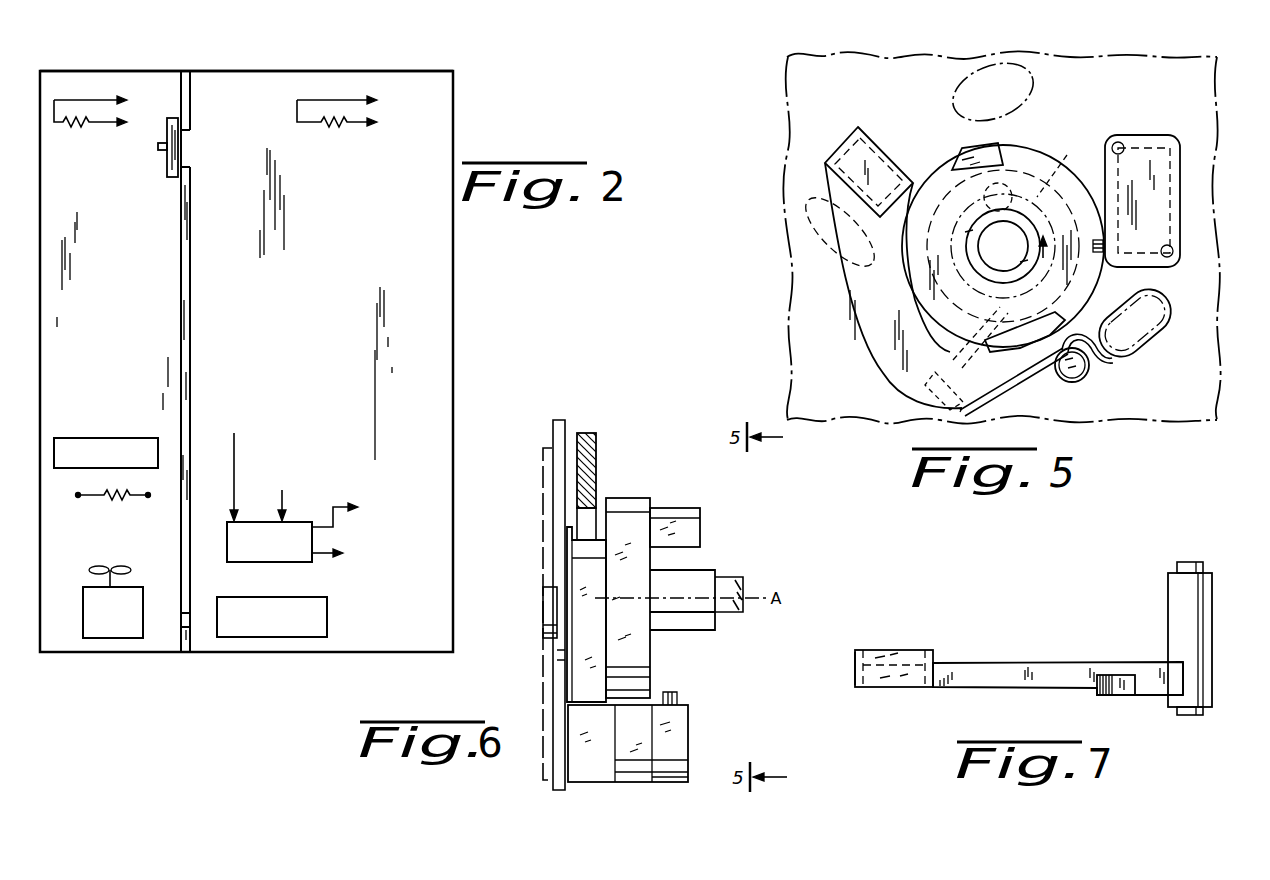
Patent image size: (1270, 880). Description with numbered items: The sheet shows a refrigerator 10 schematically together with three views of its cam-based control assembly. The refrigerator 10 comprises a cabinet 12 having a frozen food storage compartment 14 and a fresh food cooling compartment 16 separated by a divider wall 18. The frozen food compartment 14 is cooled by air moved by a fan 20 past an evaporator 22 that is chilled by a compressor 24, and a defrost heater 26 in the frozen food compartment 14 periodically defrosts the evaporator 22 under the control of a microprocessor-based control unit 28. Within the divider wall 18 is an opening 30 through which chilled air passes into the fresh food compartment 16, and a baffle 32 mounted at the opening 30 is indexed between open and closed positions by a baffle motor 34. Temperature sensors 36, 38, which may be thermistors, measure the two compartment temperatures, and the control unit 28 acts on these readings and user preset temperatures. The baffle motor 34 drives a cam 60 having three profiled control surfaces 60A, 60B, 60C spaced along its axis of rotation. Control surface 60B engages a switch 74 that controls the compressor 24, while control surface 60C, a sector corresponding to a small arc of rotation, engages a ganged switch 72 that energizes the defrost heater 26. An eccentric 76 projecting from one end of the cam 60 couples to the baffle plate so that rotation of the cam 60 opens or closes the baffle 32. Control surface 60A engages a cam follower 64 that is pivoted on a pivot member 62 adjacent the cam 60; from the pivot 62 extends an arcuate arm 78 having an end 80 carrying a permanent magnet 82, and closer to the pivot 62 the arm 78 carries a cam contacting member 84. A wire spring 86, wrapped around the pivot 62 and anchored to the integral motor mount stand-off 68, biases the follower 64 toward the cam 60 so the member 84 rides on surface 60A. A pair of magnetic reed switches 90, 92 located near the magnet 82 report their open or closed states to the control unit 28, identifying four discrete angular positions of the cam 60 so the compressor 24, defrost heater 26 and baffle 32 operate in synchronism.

In FIG. 2, the refrigerator 10 is at (372, 62).
In FIG. 2, the cabinet 12 is at (453, 341).
In FIG. 2, the frozen food storage compartment 14 is at (98, 264).
In FIG. 2, the fresh food cooling compartment 16 is at (310, 231).
In FIG. 2, the divider wall 18 is at (190, 288).
In FIG. 2, the fan 20 is at (136, 596).
In FIG. 2, the evaporator 22 is at (98, 440).
In FIG. 2, the compressor 24 is at (318, 607).
In FIG. 2, the defrost heater 26 is at (118, 494).
In FIG. 2, the control unit 28 is at (298, 525).
In FIG. 2, the opening 30 is at (190, 167).
In FIG. 2, the baffle 32 is at (167, 168).
In FIG. 2, the baffle motor 34 is at (163, 142).
In FIG. 2, the temperature sensor 36 is at (80, 112).
In FIG. 2, the temperature sensor 38 is at (330, 112).
In FIG. 6, the cam 60 is at (633, 474).
In FIG. 6, the control surface 60A is at (577, 570).
In FIG. 6, the control surface 60B is at (640, 666).
In FIG. 6, the control surface 60C is at (677, 512).
In FIG. 5, the control surface 60C is at (987, 150).
In FIG. 5, the pivot 62 is at (1076, 372).
In FIG. 7, the pivot 62 is at (1198, 603).
In FIG. 6, the cam follower 64 is at (587, 438).
In FIG. 5, the cam follower 64 is at (888, 408).
In FIG. 7, the cam follower 64 is at (1055, 634).
In FIG. 5, the stand-off 68 is at (1157, 303).
In FIG. 6, the switch 72 is at (683, 722).
In FIG. 6, the switch 74 is at (645, 760).
In FIG. 6, the eccentric 76 is at (545, 624).
In FIG. 5, the eccentric 76 is at (1060, 165).
In FIG. 5, the arcuate arm 78 is at (875, 327).
In FIG. 7, the arcuate arm 78 is at (973, 688).
In FIG. 5, the end 80 is at (870, 138).
In FIG. 7, the end 80 is at (855, 670).
In FIG. 5, the permanent magnet 82 is at (852, 155).
In FIG. 7, the permanent magnet 82 is at (895, 650).
In FIG. 5, the cam contacting member 84 is at (996, 361).
In FIG. 7, the cam contacting member 84 is at (1112, 675).
In FIG. 5, the wire spring 86 is at (1108, 360).
In FIG. 5, the magnetic reed switch 90 is at (820, 172).
In FIG. 5, the magnetic reed switch 92 is at (802, 212).